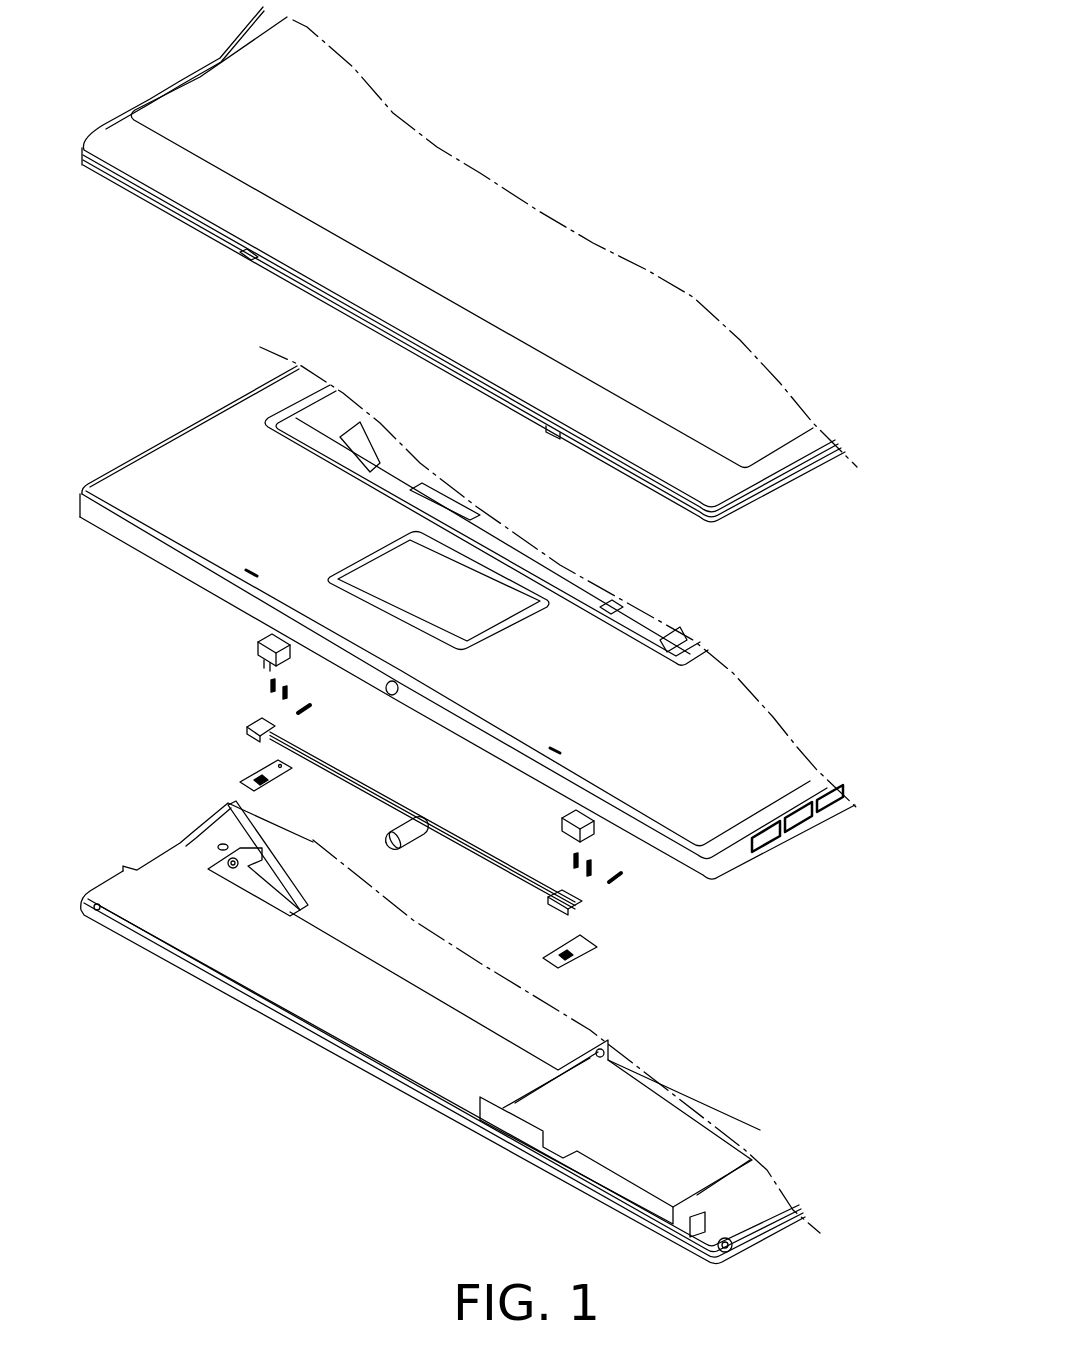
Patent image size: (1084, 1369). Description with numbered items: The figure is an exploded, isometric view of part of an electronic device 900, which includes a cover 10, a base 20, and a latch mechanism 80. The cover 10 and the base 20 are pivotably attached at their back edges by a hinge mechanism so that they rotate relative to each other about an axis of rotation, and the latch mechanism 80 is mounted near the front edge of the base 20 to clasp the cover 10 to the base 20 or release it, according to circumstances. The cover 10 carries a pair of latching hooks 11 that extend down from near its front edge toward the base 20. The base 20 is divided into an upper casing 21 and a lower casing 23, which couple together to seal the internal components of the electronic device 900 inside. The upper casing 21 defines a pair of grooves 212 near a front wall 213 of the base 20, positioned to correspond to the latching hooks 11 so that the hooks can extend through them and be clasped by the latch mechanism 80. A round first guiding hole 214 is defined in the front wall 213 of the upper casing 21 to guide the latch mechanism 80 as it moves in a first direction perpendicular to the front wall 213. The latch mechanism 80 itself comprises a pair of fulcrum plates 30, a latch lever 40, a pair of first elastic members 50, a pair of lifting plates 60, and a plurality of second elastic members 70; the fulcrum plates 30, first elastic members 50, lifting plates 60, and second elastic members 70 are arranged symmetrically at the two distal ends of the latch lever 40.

The electronic device 900 is at (580, 57).
The cover 10 is at (581, 200).
The latching hooks 11 is at (248, 259).
The base 20 is at (905, 743).
The upper casing 21 is at (777, 782).
The grooves 212 is at (248, 575).
The front wall 213 is at (157, 553).
The first guiding hole 214 is at (389, 692).
The lower casing 23 is at (705, 1162).
The fulcrum plates 30 is at (254, 655).
The latch lever 40 is at (277, 742).
The first elastic members 50 is at (297, 710).
The lifting plates 60 is at (246, 781).
The second elastic members 70 is at (270, 688).
The latch mechanism 80 is at (186, 641).